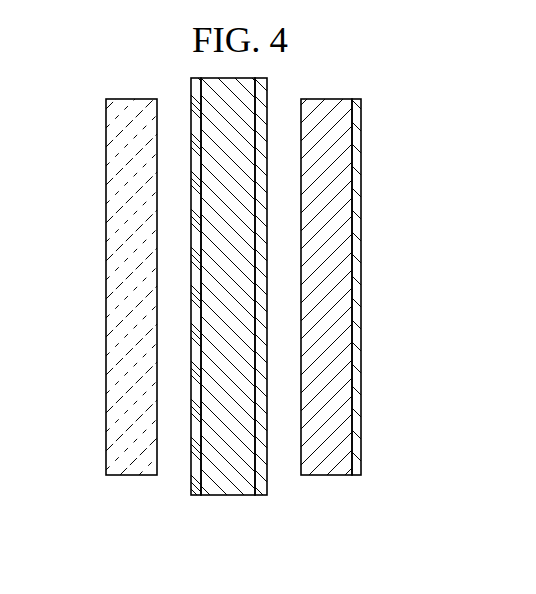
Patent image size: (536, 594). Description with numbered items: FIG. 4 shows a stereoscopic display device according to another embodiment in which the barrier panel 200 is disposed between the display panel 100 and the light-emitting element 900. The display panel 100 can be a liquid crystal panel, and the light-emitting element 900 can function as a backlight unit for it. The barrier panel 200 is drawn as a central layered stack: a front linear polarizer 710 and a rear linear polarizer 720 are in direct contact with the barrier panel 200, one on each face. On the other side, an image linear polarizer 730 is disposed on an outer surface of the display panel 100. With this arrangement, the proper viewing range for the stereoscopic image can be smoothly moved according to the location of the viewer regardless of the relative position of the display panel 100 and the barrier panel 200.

The light-emitting element 900 is at (134, 462).
The front linear polarizer 710 is at (195, 488).
The barrier panel 200 is at (230, 482).
The rear linear polarizer 720 is at (263, 488).
The display panel 100 is at (326, 462).
The image linear polarizer 730 is at (355, 477).